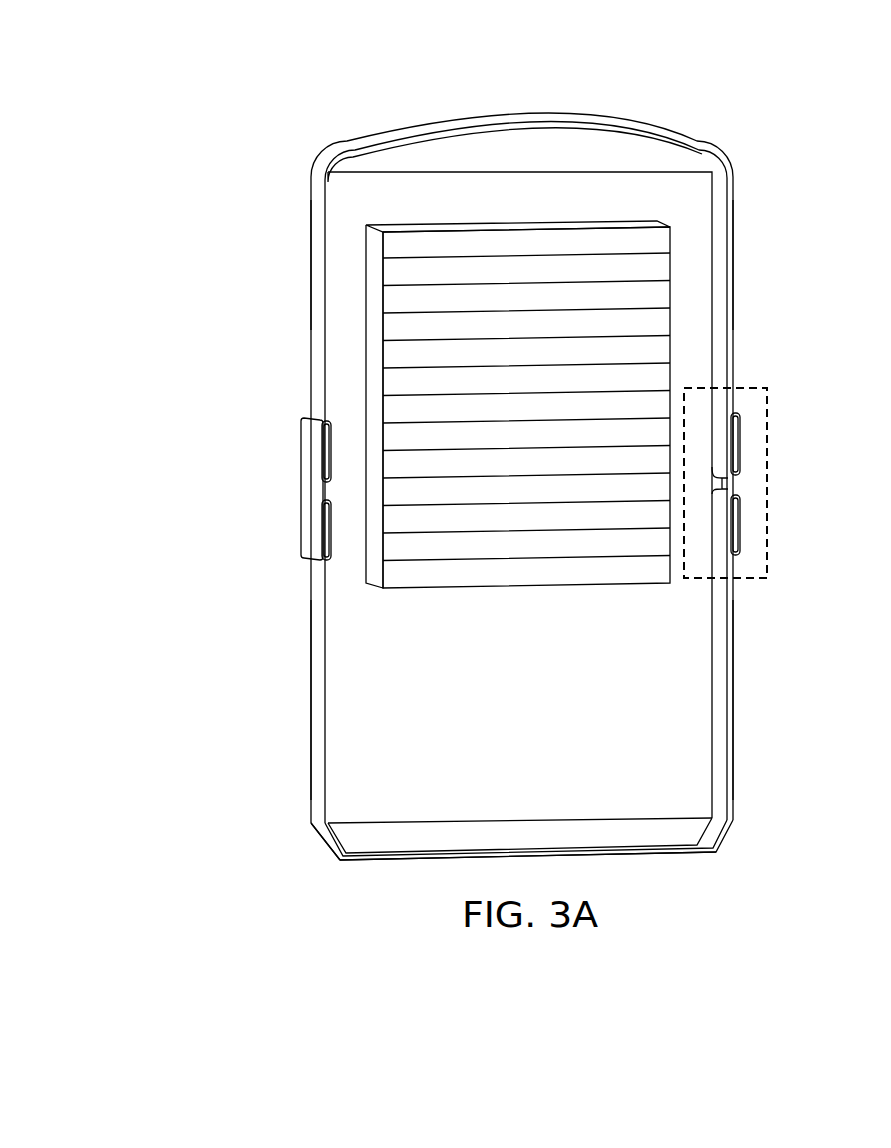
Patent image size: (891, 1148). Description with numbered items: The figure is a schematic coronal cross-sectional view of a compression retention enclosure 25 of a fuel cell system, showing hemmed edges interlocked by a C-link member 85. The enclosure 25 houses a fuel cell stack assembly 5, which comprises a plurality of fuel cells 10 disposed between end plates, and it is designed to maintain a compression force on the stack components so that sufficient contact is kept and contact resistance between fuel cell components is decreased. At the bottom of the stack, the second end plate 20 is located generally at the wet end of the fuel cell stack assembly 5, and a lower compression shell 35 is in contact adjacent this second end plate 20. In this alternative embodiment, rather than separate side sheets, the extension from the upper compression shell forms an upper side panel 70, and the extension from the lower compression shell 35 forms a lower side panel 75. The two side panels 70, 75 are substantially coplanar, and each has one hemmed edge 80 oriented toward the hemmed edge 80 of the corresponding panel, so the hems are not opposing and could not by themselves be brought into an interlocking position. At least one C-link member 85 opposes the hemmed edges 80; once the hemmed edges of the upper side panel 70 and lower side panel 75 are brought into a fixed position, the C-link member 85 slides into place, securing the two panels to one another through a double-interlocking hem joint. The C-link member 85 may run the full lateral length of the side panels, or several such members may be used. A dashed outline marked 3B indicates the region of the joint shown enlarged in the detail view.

The fuel cell stack assembly 5 is at (252, 142).
The compression retention enclosure 25 is at (293, 282).
The fuel cells 10 is at (552, 268).
The upper side panel 70 is at (311, 327).
The lower side panel 75 is at (311, 651).
The hemmed edge 80 is at (738, 519).
The C-link member 85 is at (738, 486).
The second end plate 20 is at (628, 836).
The lower compression shell 35 is at (330, 860).
The detail view callout 3B is at (770, 416).